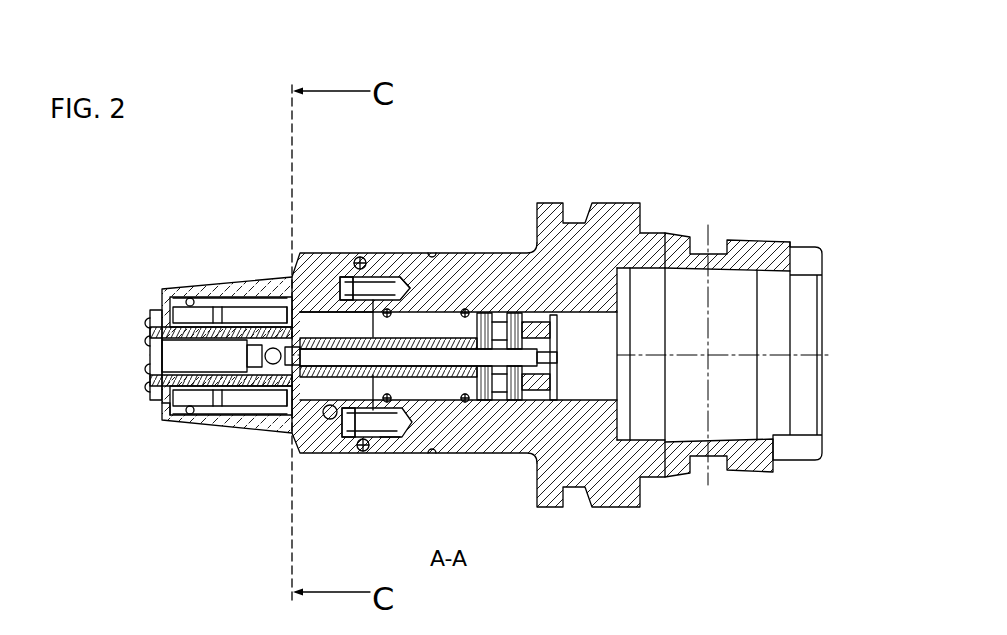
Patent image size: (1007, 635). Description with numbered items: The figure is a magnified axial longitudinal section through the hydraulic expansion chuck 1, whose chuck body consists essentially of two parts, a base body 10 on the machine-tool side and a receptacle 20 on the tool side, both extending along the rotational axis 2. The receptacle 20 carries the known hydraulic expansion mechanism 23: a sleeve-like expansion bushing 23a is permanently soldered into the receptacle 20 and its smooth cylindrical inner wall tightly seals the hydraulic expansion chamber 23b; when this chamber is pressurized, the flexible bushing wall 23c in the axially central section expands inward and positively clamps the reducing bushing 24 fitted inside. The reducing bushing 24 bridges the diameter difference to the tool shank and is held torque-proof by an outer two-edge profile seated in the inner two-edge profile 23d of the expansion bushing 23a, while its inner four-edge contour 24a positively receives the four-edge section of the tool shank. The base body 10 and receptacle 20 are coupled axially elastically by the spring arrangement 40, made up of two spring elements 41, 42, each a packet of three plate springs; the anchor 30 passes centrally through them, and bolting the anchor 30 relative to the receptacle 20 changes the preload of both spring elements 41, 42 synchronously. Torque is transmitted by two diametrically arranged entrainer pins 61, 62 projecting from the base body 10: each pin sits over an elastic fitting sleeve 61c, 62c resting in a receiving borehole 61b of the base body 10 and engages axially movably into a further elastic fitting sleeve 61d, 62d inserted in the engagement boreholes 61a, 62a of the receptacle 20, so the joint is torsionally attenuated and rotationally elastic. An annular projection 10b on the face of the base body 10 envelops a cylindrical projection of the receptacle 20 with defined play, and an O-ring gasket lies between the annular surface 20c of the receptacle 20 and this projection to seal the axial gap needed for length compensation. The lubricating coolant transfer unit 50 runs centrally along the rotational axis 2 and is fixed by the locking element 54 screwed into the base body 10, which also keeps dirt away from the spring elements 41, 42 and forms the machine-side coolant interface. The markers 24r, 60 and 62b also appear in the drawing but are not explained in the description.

The hydraulic expansion chuck 1 is at (700, 190).
The rotational axis 2 is at (790, 355).
The base body 10 is at (665, 512).
The annular projection 10b is at (390, 272).
The receptacle 20 is at (300, 454).
The annular surface 20c is at (362, 452).
The hydraulic expansion mechanism 23 is at (128, 397).
The expansion bushing 23a is at (163, 403).
The hydraulic expansion chamber 23b is at (195, 393).
The flexible bushing wall 23c is at (222, 407).
The inner two-edge profile 23d is at (287, 392).
The reducing bushing 24 is at (152, 360).
The inner four-edge contour 24a is at (168, 318).
The collet guide 24r is at (245, 282).
The anchor 30 is at (433, 337).
The spring arrangement 40 is at (509, 412).
The spring element 41 is at (485, 378).
The spring element 42 is at (520, 400).
The lubricating coolant transfer unit 50 is at (405, 338).
The locking element 54 is at (560, 326).
The fluid passage 60 is at (335, 275).
The entrainer pin 61 is at (401, 275).
The engagement borehole 61a is at (362, 290).
The receiving borehole 61b is at (388, 272).
The fitting sleeve 61c is at (400, 422).
The fitting sleeve 61d is at (357, 259).
The entrainer pin 62 is at (405, 418).
The engagement borehole 62a is at (352, 437).
The lower cylinder wall 62b is at (390, 438).
The fitting sleeve 62c is at (407, 277).
The fitting sleeve 62d is at (362, 452).